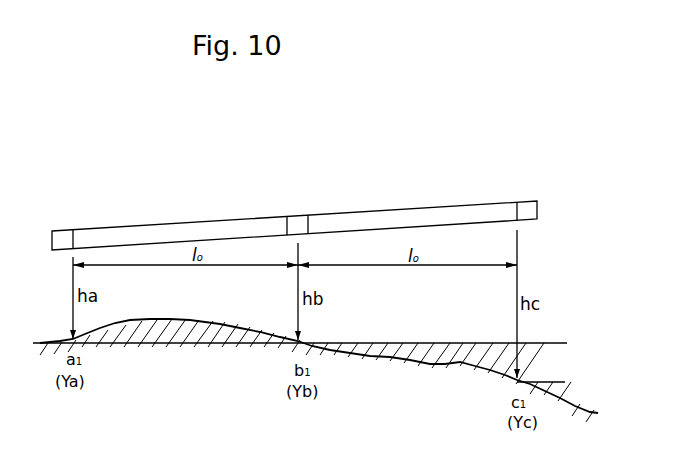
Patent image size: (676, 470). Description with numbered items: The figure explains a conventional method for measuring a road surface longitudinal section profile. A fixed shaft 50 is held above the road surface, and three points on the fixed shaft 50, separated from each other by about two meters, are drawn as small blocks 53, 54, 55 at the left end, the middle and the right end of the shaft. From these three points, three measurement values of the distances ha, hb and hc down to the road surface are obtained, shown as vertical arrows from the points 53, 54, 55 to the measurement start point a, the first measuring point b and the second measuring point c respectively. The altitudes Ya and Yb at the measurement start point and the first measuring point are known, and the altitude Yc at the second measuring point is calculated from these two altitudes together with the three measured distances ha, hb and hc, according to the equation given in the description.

The fixed shaft 50 is at (160, 228).
The distance sensor 53 is at (59, 234).
The distance sensor 54 is at (297, 220).
The distance sensor 55 is at (528, 207).